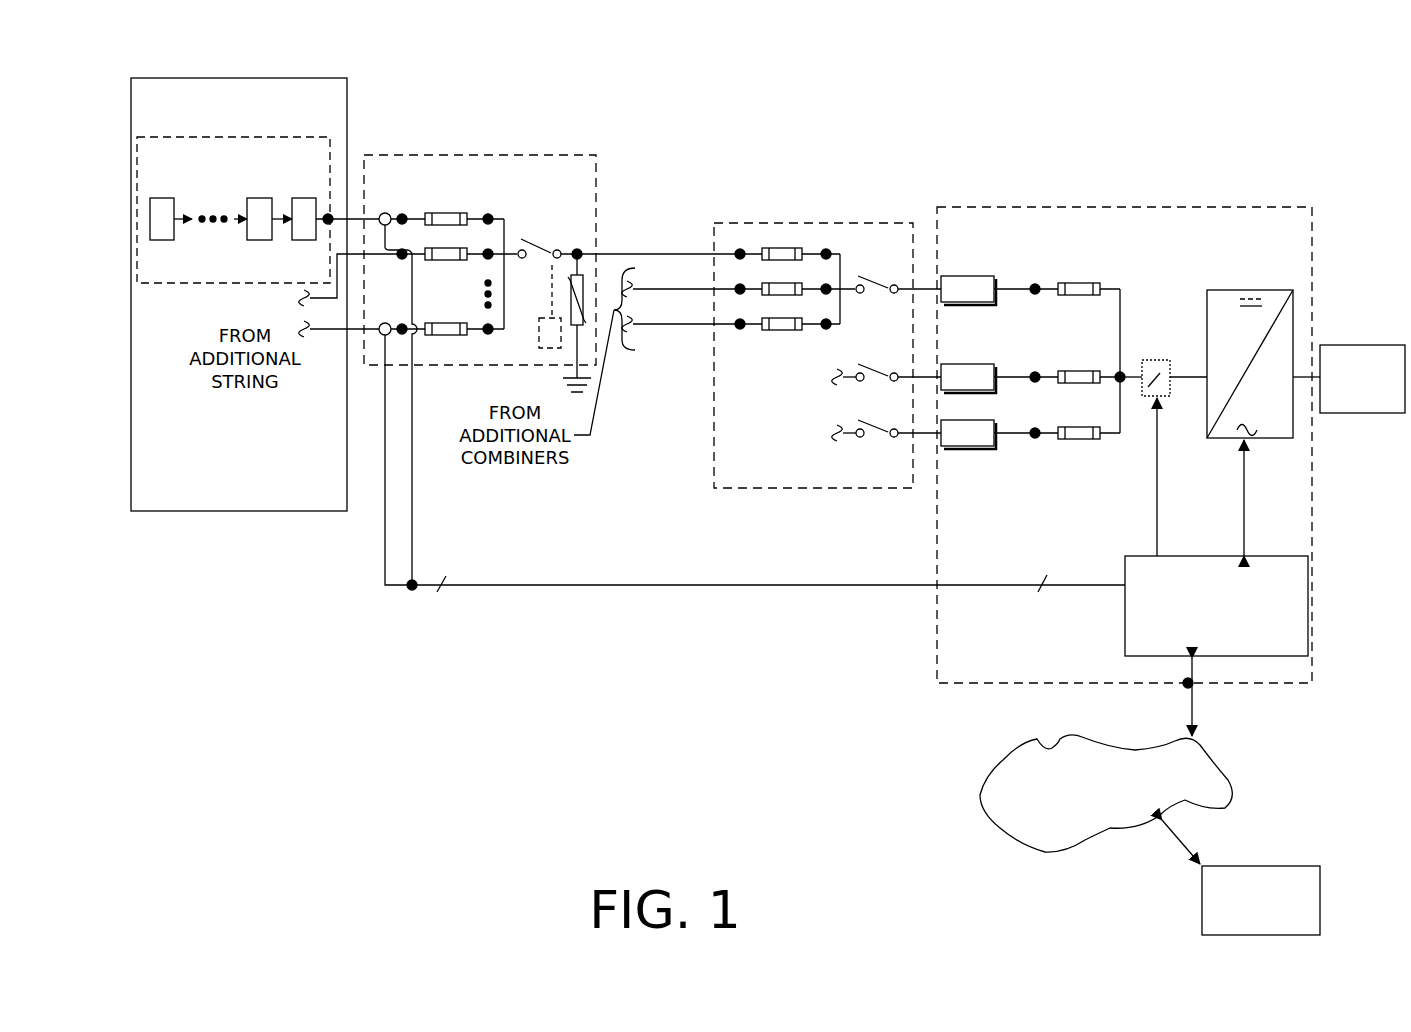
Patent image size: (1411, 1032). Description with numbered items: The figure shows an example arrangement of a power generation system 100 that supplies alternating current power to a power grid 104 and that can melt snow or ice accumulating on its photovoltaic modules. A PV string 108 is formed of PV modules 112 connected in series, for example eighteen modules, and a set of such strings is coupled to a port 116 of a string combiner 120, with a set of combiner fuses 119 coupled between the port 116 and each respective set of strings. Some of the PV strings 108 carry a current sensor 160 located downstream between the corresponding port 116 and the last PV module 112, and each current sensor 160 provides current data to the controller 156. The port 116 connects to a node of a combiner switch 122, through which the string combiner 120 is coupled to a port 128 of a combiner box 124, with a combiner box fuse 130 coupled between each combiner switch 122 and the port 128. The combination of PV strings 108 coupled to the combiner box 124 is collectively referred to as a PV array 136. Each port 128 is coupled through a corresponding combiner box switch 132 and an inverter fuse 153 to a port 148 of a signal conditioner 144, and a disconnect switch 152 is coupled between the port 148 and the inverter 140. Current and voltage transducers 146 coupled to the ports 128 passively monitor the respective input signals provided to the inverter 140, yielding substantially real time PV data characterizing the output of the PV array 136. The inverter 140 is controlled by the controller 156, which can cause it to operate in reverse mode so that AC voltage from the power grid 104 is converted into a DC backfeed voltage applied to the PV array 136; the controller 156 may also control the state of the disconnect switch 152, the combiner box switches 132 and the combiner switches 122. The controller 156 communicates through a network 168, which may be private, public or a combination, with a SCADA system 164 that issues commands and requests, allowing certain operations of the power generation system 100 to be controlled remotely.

The power generation system 100 is at (206, 54).
The power grid 104 is at (1349, 379).
The PV string 108 is at (147, 286).
The PV module 112 is at (162, 198).
The port 116 is at (523, 260).
The combiner fuse 119 is at (443, 213).
The string combiner 120 is at (597, 163).
The combiner switch 122 is at (541, 242).
The combiner box 124 is at (813, 355).
The port 128 is at (861, 294).
The combiner box fuse 130 is at (783, 248).
The combiner box switch 132 is at (884, 282).
The PV array 136 is at (239, 294).
The inverter 140 is at (1230, 290).
The signal conditioner 144 is at (1124, 445).
The transducer 146 is at (966, 276).
The port 148 is at (1120, 352).
The disconnect switch 152 is at (1160, 360).
The inverter fuse 153 is at (1081, 283).
The controller 156 is at (1216, 606).
The current sensor 160 is at (384, 213).
The SCADA system 164 is at (1241, 877).
The network 168 is at (1106, 755).